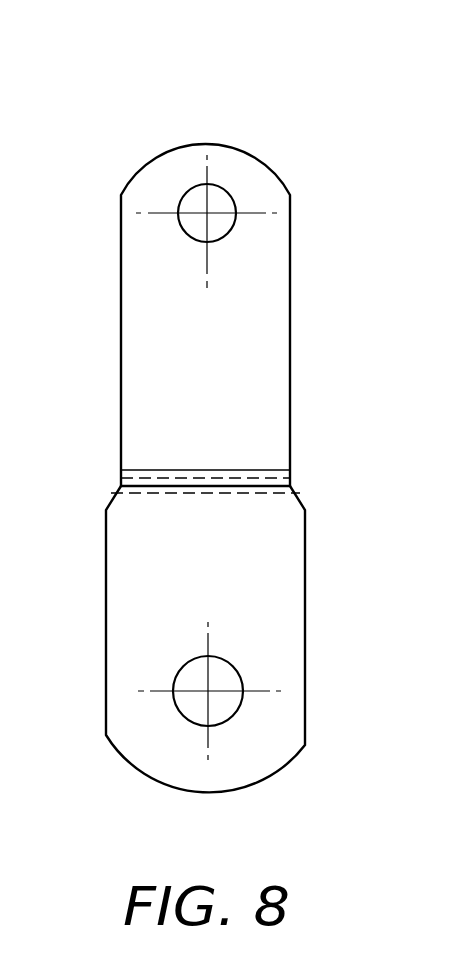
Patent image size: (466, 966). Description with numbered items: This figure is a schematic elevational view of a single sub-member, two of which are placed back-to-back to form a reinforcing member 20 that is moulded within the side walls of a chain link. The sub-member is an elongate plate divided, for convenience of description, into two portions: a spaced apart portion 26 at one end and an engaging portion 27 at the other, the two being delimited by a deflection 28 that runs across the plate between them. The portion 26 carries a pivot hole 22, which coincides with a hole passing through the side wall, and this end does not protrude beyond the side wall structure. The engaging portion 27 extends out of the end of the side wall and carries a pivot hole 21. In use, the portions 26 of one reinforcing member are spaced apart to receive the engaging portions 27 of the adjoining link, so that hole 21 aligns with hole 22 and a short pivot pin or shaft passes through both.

The reinforcing member 20 is at (227, 407).
The pivot hole 21 is at (188, 706).
The pivot hole 22 is at (193, 198).
The spaced apart portion 26 is at (270, 328).
The engaging portion 27 is at (278, 609).
The deflection 28 is at (178, 480).